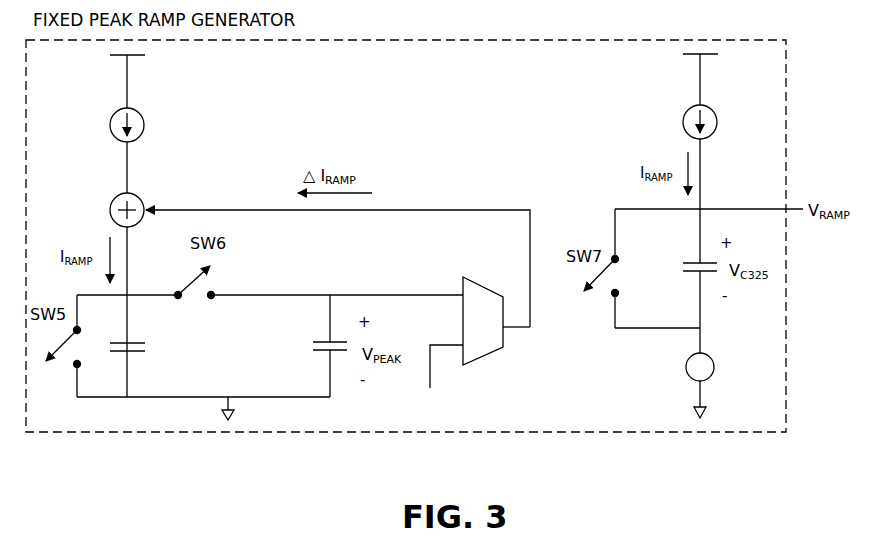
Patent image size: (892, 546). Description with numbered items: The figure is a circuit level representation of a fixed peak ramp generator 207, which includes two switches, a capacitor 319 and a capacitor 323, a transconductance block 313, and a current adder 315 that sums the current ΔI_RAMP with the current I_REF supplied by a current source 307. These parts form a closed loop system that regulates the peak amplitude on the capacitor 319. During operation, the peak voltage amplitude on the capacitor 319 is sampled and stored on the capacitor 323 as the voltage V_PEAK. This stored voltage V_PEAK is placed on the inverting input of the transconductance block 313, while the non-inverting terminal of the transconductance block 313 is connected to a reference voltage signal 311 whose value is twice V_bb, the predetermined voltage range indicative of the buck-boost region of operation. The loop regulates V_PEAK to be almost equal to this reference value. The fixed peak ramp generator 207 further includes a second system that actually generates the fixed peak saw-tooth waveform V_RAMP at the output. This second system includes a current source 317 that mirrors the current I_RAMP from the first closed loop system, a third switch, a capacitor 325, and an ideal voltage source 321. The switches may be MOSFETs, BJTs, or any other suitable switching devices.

The fixed peak ramp generator 207 is at (515, 432).
The current source 307 is at (110, 108).
The reference voltage signal 311 is at (432, 388).
The transconductance block 313 is at (490, 283).
The current adder 315 is at (108, 196).
The current source 317 is at (688, 106).
The capacitor 319 is at (143, 337).
The ideal voltage source 321 is at (715, 367).
The capacitor 323 is at (313, 334).
The capacitor 325 is at (688, 254).